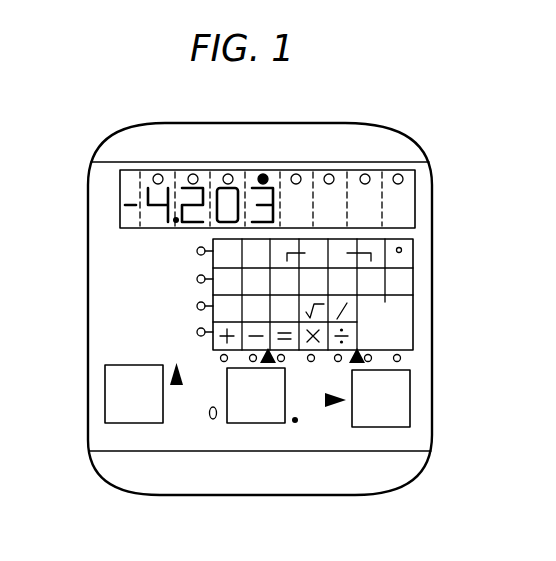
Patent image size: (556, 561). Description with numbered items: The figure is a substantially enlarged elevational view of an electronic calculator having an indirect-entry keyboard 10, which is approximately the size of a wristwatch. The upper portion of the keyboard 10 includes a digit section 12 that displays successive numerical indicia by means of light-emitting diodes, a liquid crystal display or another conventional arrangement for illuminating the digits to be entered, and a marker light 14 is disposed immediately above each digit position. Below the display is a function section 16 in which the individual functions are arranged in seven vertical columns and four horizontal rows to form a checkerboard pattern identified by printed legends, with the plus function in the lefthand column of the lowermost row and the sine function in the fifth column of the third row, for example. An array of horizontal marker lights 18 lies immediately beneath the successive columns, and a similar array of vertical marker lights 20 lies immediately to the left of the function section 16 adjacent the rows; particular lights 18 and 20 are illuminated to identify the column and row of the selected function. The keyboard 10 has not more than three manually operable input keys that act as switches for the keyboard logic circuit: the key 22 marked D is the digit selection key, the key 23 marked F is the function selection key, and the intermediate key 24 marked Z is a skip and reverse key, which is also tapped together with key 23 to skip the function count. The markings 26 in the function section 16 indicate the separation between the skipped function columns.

The indirect-entry keyboard 10 is at (408, 140).
The digit section 12 is at (415, 208).
The marker light 14 is at (366, 174).
The function section 16 is at (420, 275).
The horizontal marker lights 18 is at (372, 356).
The vertical marker lights 20 is at (197, 279).
The digit selection key 22 is at (105, 409).
The function selection key 23 is at (410, 423).
The skip key 24 is at (257, 425).
The markings 26 is at (353, 364).